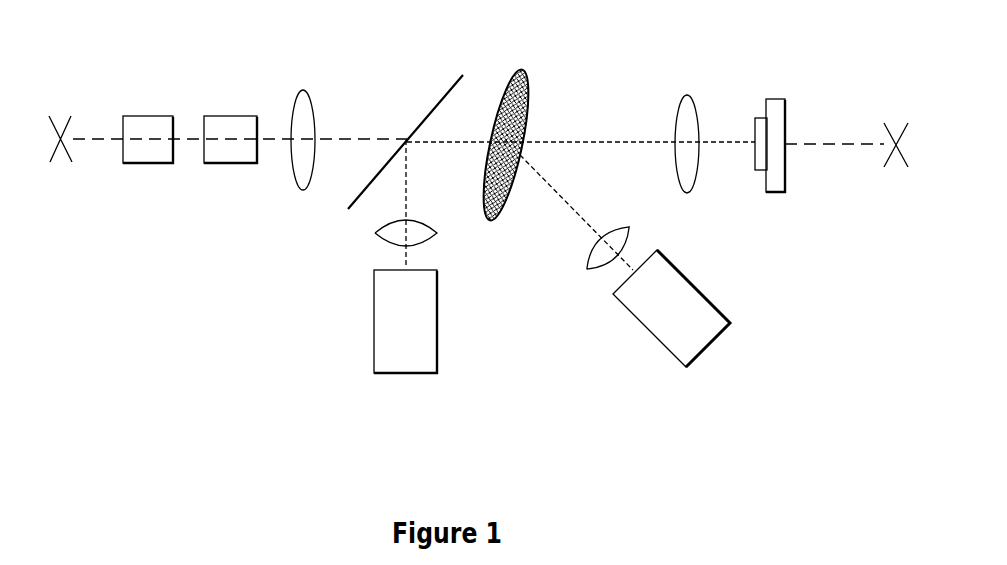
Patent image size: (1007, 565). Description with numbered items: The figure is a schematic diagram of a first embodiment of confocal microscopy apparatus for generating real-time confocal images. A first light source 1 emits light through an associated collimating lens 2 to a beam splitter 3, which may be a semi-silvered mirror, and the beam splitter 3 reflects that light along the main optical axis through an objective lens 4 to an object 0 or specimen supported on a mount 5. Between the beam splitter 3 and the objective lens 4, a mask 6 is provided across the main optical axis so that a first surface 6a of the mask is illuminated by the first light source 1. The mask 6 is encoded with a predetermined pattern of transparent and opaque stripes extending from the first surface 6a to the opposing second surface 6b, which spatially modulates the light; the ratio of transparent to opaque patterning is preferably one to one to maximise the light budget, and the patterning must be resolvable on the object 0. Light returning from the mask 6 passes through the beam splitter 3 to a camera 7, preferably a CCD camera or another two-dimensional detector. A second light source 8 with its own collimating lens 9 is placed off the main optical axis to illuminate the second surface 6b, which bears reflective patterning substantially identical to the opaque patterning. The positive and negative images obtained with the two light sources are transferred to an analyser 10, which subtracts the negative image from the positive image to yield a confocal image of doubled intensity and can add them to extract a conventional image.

The object 0 is at (765, 112).
The first light source 1 is at (374, 323).
The collimating lens 2 is at (376, 234).
The beam splitter 3 is at (447, 90).
The objective lens 4 is at (685, 125).
The mount 5 is at (786, 124).
The mask 6 is at (524, 72).
The first surface of the mask 6a is at (469, 207).
The second surface of the mask 6b is at (568, 97).
The camera 7 is at (232, 132).
The second light source 8 is at (690, 313).
The collimating lens 9 is at (620, 227).
The analyser 10 is at (150, 117).